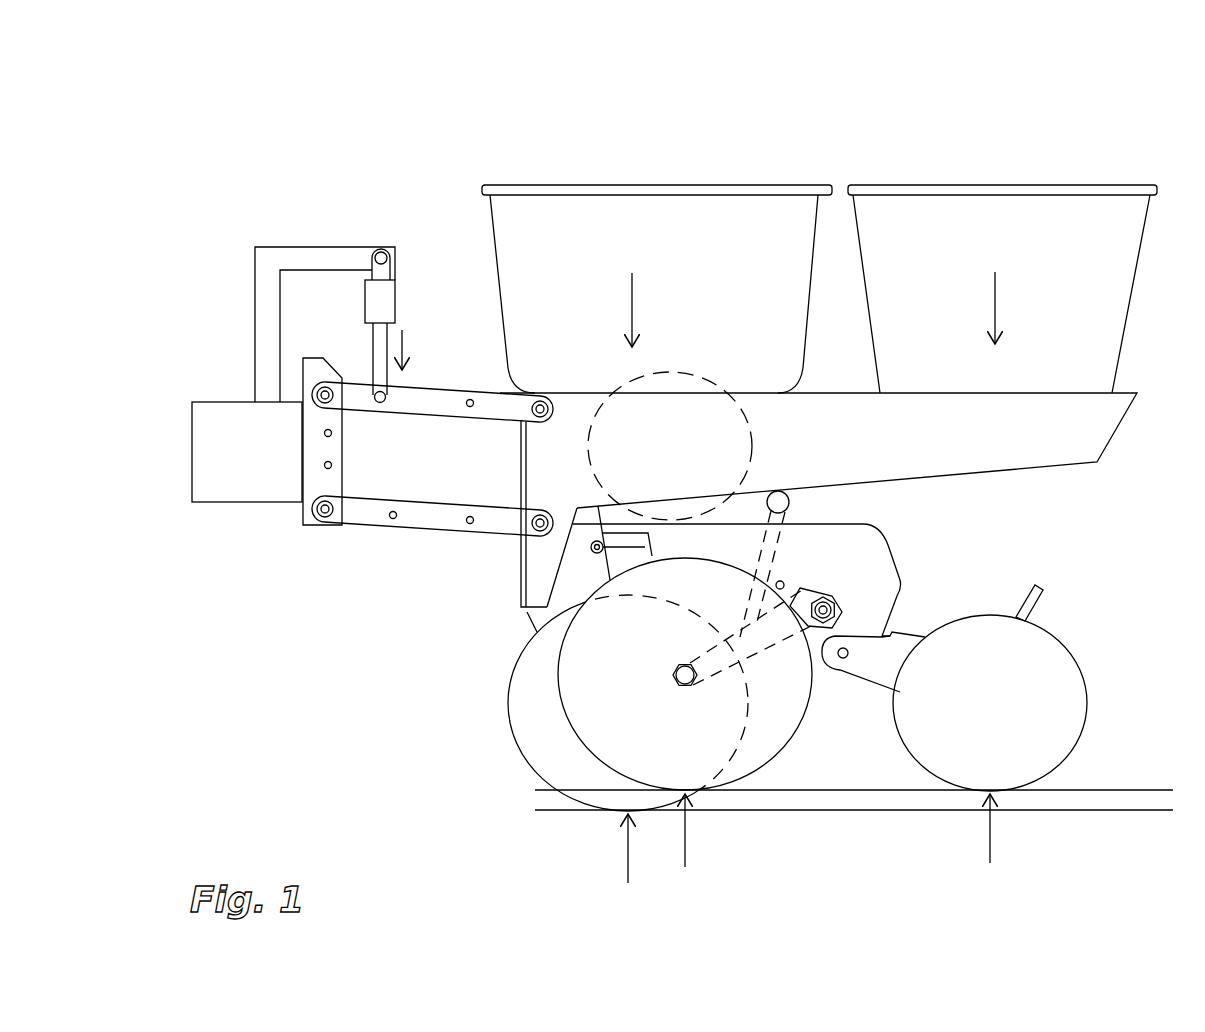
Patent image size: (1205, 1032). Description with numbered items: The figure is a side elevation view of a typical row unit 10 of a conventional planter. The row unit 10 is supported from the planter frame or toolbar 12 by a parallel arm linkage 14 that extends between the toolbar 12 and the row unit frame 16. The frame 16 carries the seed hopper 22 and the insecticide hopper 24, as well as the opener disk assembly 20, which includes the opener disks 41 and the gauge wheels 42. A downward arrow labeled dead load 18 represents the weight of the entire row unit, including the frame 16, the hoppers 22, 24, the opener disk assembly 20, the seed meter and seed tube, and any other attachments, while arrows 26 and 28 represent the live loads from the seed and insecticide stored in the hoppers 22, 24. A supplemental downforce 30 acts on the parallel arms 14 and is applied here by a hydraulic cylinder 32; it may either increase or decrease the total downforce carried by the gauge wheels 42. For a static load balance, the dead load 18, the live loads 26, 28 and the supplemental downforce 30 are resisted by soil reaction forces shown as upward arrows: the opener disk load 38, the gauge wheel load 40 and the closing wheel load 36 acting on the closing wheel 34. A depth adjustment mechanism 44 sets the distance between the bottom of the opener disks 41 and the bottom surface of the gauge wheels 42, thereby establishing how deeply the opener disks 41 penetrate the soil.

The row unit 10 is at (1098, 135).
The toolbar 12 is at (190, 452).
The parallel arm linkage 14 is at (388, 543).
The row unit frame 16 is at (522, 574).
The dead load 18 is at (647, 500).
The opener disk assembly 20 is at (473, 692).
The seed hopper 22 is at (652, 239).
The insecticide hopper 24 is at (1014, 239).
The live load 26 is at (633, 287).
The live load 28 is at (996, 286).
The supplemental downforce 30 is at (403, 343).
The hydraulic cylinder 32 is at (397, 300).
The closing wheel 34 is at (1013, 573).
The closing wheel load 36 is at (991, 845).
The opener disk load 38 is at (627, 868).
The gauge wheel load 40 is at (686, 848).
The opener disks 41 is at (538, 732).
The gauge wheels 42 is at (797, 741).
The depth adjustment mechanism 44 is at (817, 512).